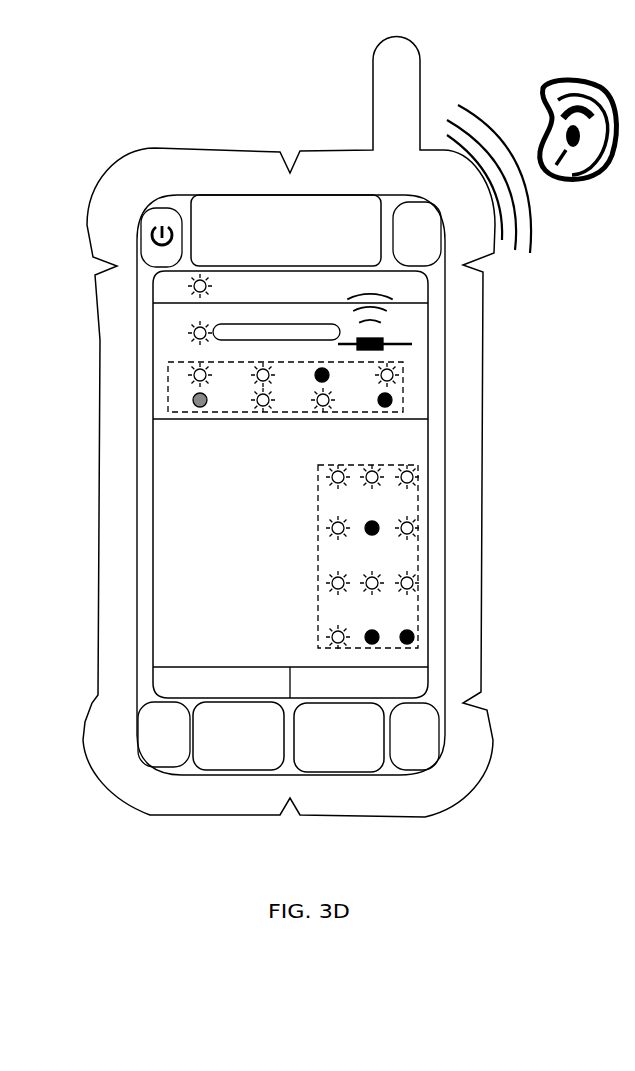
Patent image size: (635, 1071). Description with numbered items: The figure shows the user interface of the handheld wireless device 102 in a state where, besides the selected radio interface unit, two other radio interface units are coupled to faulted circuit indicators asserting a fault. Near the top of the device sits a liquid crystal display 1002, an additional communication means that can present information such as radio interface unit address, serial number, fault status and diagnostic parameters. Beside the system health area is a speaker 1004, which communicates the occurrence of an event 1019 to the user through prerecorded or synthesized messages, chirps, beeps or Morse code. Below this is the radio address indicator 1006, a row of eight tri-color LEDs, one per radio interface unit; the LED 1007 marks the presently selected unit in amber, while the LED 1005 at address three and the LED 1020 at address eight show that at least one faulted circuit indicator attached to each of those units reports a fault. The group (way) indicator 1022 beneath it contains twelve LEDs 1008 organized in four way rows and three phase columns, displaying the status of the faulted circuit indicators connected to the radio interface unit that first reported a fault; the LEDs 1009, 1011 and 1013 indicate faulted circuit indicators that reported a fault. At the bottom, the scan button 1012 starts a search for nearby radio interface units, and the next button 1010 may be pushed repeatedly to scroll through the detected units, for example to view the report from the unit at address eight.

The wireless device 102 is at (311, 61).
The liquid crystal display 1002 is at (227, 195).
The event 1019 is at (531, 163).
The speaker 1004 is at (380, 340).
The identifier indicator 3 1005 is at (330, 375).
The radio address indicator 1006 is at (403, 387).
The LED 1020 is at (392, 405).
The LED 1007 is at (195, 403).
The LED 1009 is at (378, 525).
The LEDs 1008 is at (420, 553).
The group (way) indicator 1022 is at (170, 560).
The LED 1011 is at (412, 637).
The LED 1013 is at (378, 641).
The scan button 1012 is at (212, 736).
The next button 1010 is at (368, 747).